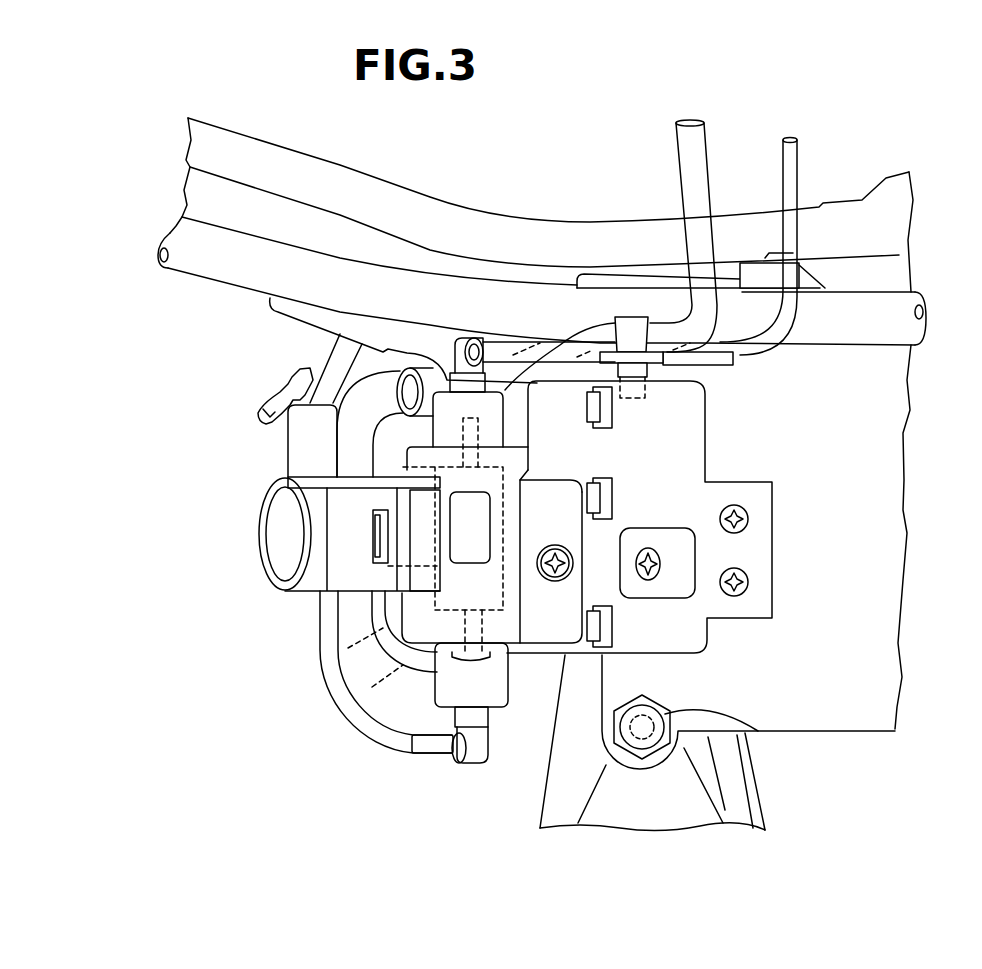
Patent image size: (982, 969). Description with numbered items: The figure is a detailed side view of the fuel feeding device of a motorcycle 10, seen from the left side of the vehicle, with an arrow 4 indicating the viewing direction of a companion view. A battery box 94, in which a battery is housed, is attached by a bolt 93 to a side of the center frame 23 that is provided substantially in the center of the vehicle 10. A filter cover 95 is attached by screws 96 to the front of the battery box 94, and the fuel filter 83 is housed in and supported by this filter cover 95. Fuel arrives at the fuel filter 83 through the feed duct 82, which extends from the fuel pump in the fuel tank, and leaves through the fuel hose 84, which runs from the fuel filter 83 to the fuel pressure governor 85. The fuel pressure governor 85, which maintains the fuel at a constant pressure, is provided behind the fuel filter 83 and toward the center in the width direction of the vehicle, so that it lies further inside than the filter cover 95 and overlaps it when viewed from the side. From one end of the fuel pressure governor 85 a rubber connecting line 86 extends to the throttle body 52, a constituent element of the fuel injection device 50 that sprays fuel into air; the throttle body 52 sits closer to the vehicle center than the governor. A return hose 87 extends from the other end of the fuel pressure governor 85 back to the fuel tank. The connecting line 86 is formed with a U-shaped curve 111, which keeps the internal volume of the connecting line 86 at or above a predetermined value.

The motorcycle 10 is at (247, 117).
The center frame 23 is at (473, 240).
The viewing direction of FIG. 4 is at (125, 523).
The fuel injection device 50 is at (343, 387).
The throttle body 52 is at (307, 452).
The feed duct 82 is at (786, 138).
The fuel filter 83 is at (473, 757).
The fuel hose 84 is at (360, 720).
The fuel pressure governor 85 is at (450, 477).
The connecting line 86 is at (355, 617).
The return hose 87 is at (686, 143).
The bolt 93 is at (657, 718).
The battery box 94 is at (850, 693).
The filter cover 95 is at (498, 618).
The screws 96 is at (748, 517).
The U-shaped curve 111 is at (352, 667).